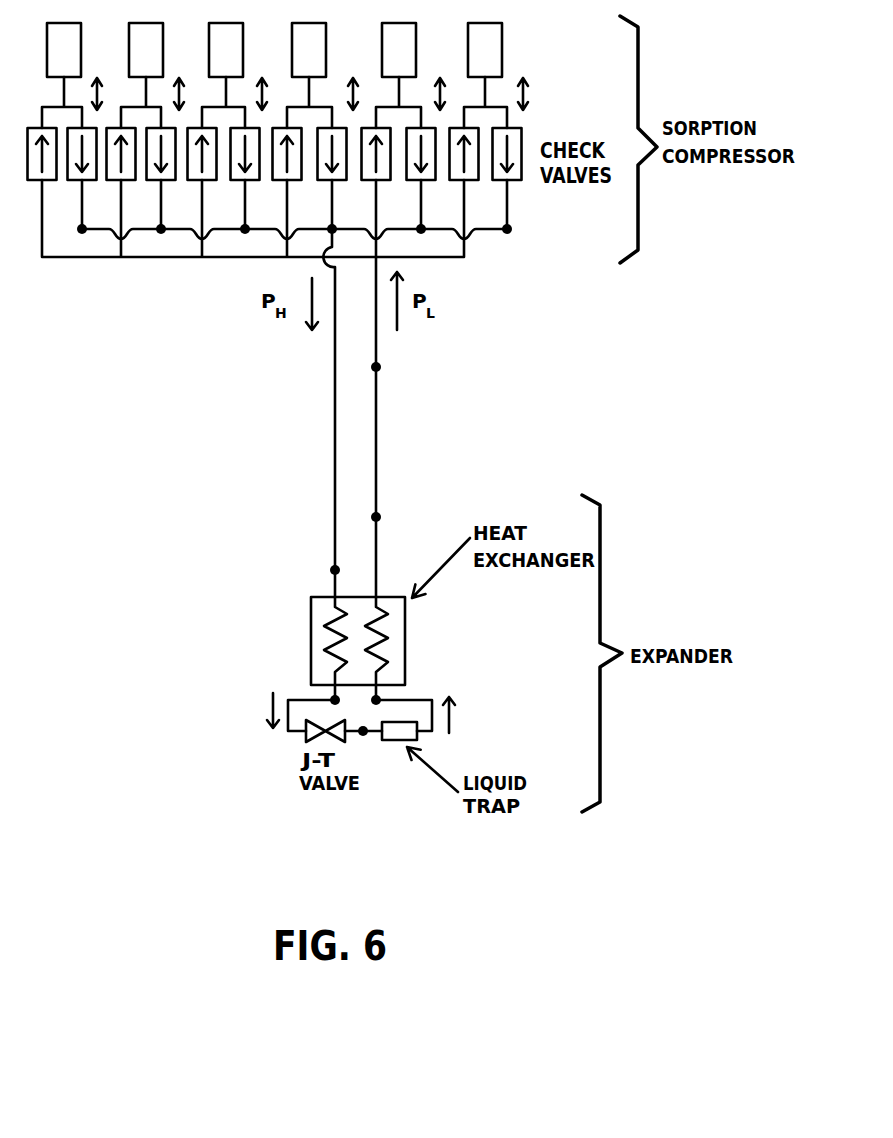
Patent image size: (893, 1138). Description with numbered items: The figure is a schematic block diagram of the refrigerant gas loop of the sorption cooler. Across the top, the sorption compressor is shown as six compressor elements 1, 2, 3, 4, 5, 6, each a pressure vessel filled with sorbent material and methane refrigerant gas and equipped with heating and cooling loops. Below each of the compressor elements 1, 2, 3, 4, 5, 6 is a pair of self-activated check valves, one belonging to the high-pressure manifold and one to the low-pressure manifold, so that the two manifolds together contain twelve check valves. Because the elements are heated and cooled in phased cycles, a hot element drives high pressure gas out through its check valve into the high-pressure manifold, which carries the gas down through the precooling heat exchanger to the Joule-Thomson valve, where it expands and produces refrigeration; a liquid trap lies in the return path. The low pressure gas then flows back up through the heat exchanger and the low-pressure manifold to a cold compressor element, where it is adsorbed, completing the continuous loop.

The compressor element 1 is at (65, 101).
The compressor element 2 is at (146, 101).
The compressor element 3 is at (228, 101).
The compressor element 4 is at (316, 101).
The compressor element 5 is at (404, 101).
The compressor element 6 is at (489, 101).